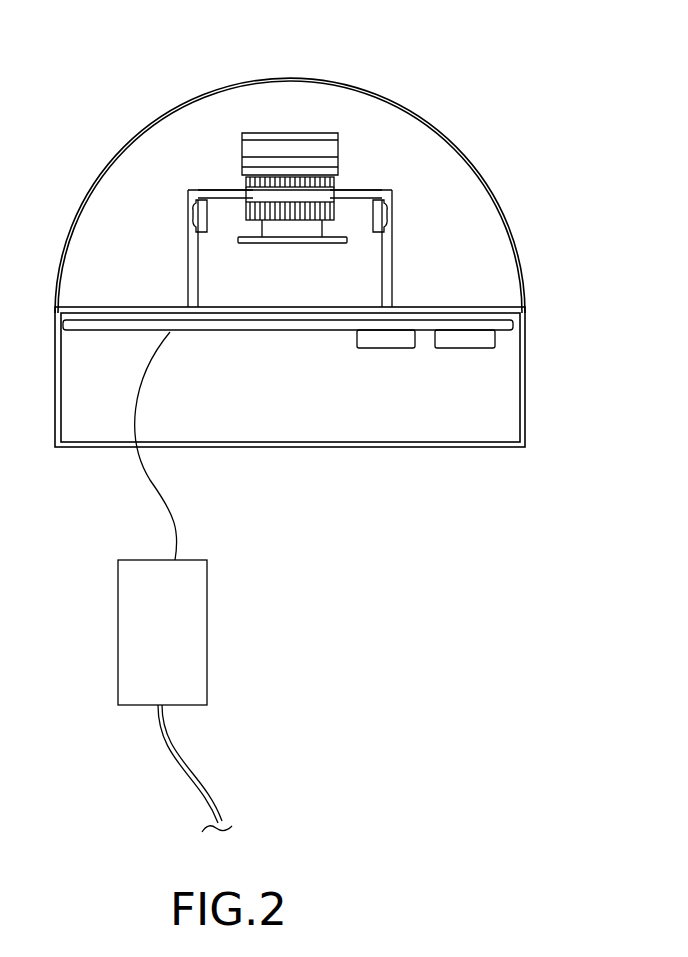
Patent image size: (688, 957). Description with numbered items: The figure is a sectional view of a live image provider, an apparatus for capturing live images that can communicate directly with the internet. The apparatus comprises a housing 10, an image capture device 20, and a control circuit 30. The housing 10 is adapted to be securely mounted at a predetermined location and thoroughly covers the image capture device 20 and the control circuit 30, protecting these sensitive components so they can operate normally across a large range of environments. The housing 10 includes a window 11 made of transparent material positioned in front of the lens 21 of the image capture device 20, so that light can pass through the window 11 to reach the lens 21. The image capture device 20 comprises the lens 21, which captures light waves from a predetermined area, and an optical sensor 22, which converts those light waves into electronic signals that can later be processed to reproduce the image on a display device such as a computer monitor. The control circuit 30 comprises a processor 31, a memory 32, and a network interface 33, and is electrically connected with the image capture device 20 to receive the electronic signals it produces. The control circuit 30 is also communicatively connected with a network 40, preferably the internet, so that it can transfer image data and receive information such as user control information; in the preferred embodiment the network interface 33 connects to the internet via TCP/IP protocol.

The housing 10 is at (448, 140).
The window 11 is at (318, 82).
The image capture device 20 is at (224, 161).
The lens 21 is at (291, 133).
The optical sensor 22 is at (193, 188).
The control circuit 30 is at (393, 420).
The processor 31 is at (463, 338).
The memory 32 is at (393, 340).
The network interface 33 is at (165, 617).
The network 40 is at (197, 780).